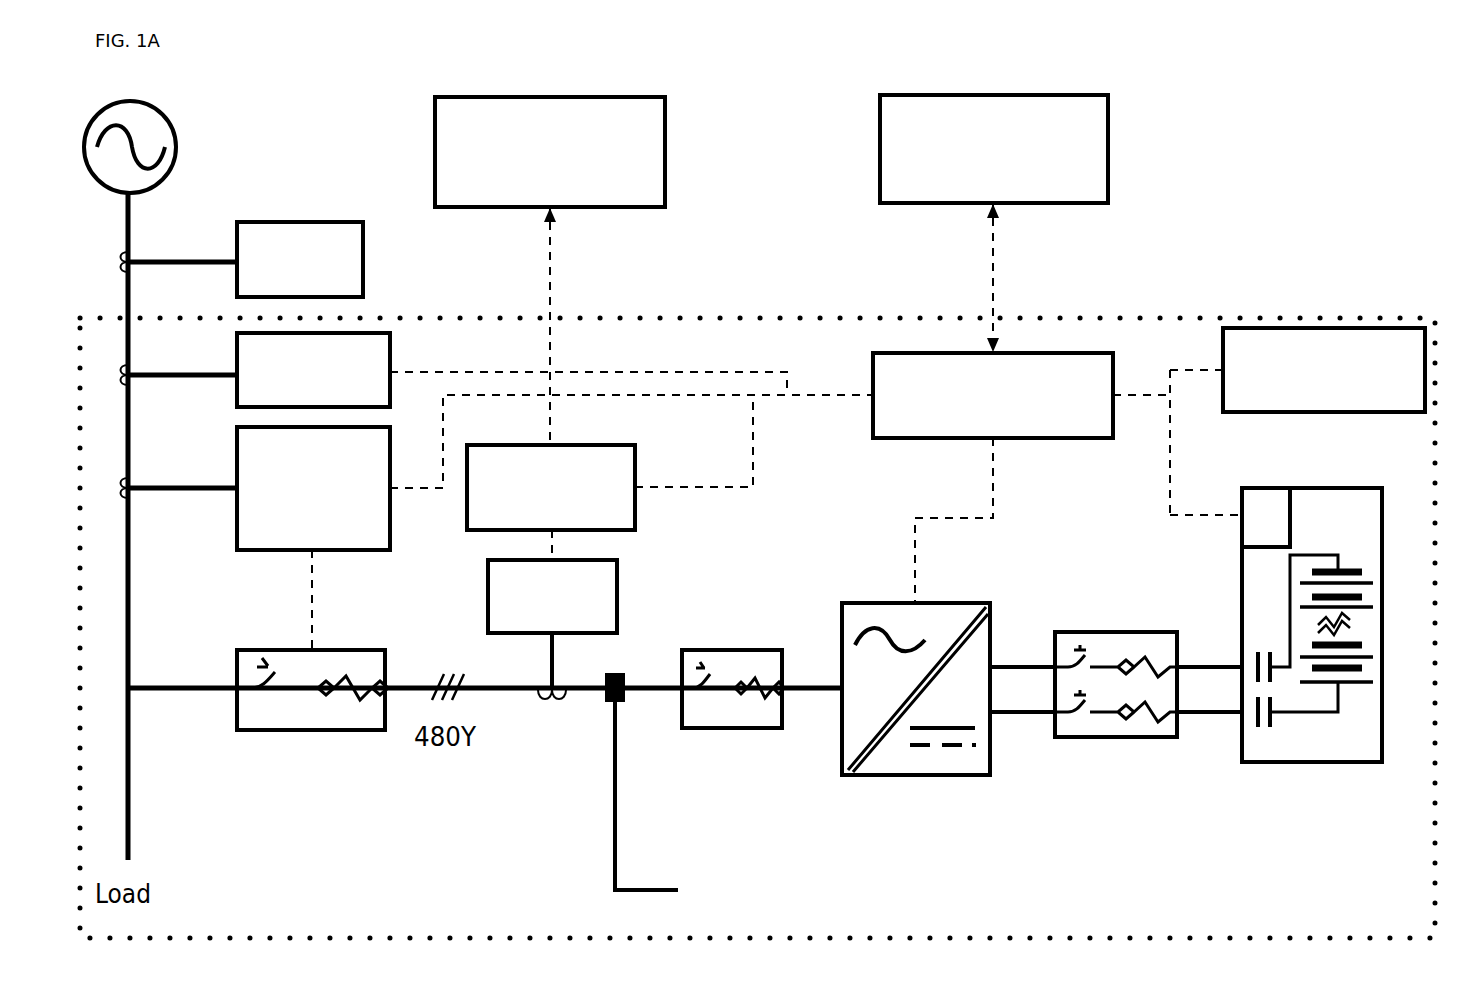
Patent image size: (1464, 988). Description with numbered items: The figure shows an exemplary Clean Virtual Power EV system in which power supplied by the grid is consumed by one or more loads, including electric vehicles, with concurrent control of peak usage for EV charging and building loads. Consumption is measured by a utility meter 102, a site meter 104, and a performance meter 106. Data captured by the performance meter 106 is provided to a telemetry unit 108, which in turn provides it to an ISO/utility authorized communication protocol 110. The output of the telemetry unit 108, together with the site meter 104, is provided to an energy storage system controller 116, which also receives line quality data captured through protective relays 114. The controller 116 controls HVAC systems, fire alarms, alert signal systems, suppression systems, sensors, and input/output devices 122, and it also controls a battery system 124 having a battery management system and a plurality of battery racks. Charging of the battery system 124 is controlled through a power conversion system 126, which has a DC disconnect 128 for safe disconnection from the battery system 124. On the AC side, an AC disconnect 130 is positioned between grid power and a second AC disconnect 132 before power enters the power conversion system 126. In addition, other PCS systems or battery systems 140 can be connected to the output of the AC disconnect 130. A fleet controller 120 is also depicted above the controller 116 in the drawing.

The utility meter 102 is at (314, 259).
The site meter 104 is at (512, 370).
The performance meter 106 is at (565, 629).
The telemetry unit 108 is at (610, 383).
The ISO/utility authorized communication protocol 110 is at (570, 152).
The protective relays 114 is at (555, 522).
The energy storage system (ESS) controller 116 is at (1006, 434).
The fleet controller / EMS 120 is at (1007, 224).
The HVAC systems, fire alarms, alert signal systems, suppression systems, sensors, a 122 is at (1297, 358).
The battery system 124 is at (1284, 644).
The power conversion system 126 is at (917, 628).
The DC disconnect 128 is at (1115, 711).
The AC disconnect 130 is at (294, 732).
The second AC disconnect 132 is at (735, 716).
The other PCS systems or battery systems 140 is at (834, 789).